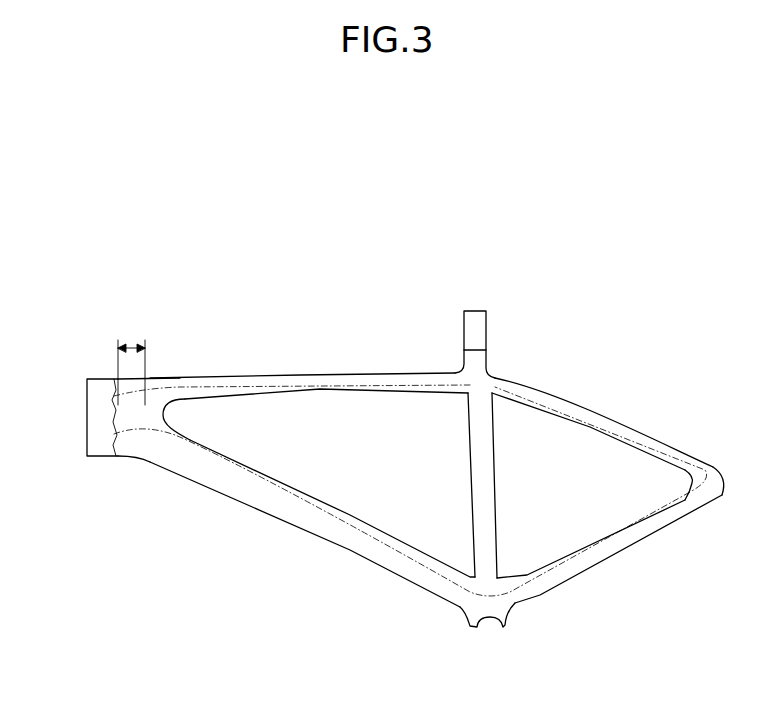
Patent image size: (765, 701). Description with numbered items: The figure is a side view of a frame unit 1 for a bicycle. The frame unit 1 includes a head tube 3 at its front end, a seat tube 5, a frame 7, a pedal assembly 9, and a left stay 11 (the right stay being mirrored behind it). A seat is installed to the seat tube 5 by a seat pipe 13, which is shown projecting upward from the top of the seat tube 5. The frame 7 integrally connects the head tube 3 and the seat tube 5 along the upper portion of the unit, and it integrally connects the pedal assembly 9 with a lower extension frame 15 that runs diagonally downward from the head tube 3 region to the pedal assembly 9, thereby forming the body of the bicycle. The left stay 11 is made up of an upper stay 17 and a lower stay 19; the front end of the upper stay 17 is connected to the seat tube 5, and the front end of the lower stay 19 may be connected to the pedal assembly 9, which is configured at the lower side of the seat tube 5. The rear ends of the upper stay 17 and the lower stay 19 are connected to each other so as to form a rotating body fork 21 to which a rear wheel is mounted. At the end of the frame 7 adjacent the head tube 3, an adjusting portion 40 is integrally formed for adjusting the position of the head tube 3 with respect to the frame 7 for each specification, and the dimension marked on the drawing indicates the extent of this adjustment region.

The frame unit 1 is at (213, 311).
The head tube 3 is at (87, 418).
The seat tube 5 is at (463, 360).
The frame 7 is at (323, 372).
The pedal assembly 9 is at (475, 622).
The left stay 11 is at (620, 398).
The seat pipe 13 is at (486, 320).
The lower extension frame 15 is at (292, 520).
The upper stay 17 is at (560, 388).
The lower stay 19 is at (620, 548).
The rotating body fork 21 is at (717, 497).
The adjusting portion 40 is at (135, 465).